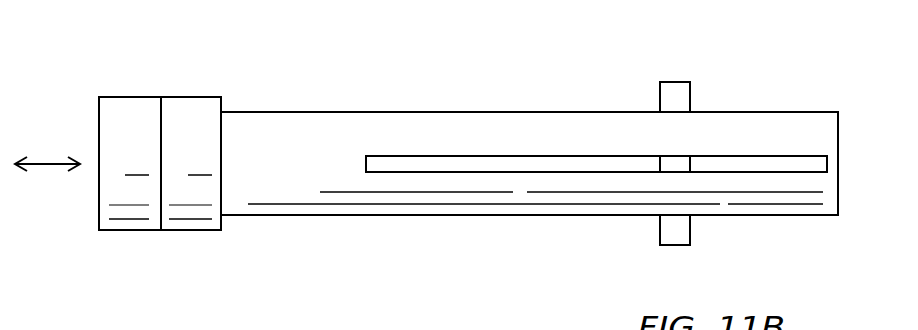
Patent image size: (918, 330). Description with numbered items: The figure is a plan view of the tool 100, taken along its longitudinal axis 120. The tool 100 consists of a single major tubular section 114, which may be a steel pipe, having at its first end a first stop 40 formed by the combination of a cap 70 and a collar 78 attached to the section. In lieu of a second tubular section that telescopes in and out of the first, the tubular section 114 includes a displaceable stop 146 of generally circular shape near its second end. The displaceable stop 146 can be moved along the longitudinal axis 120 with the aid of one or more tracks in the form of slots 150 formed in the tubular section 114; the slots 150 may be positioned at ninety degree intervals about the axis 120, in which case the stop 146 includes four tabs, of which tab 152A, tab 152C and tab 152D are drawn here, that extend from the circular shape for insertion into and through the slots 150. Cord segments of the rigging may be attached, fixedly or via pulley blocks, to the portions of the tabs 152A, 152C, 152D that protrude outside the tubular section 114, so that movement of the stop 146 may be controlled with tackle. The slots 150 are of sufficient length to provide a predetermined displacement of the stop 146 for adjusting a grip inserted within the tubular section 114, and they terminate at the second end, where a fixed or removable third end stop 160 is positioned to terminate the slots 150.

The first stop 40 is at (108, 90).
The cap 70 is at (133, 96).
The collar 78 is at (203, 96).
The tool 100 is at (457, 66).
The tubular section 114 is at (311, 112).
The longitudinal axis 120 is at (50, 165).
The displaceable stop 146 is at (690, 228).
The slots 150 is at (572, 163).
The tab 152A is at (670, 82).
The tab 152C is at (672, 246).
The tab 152D is at (677, 163).
The third end stop 160 is at (840, 137).